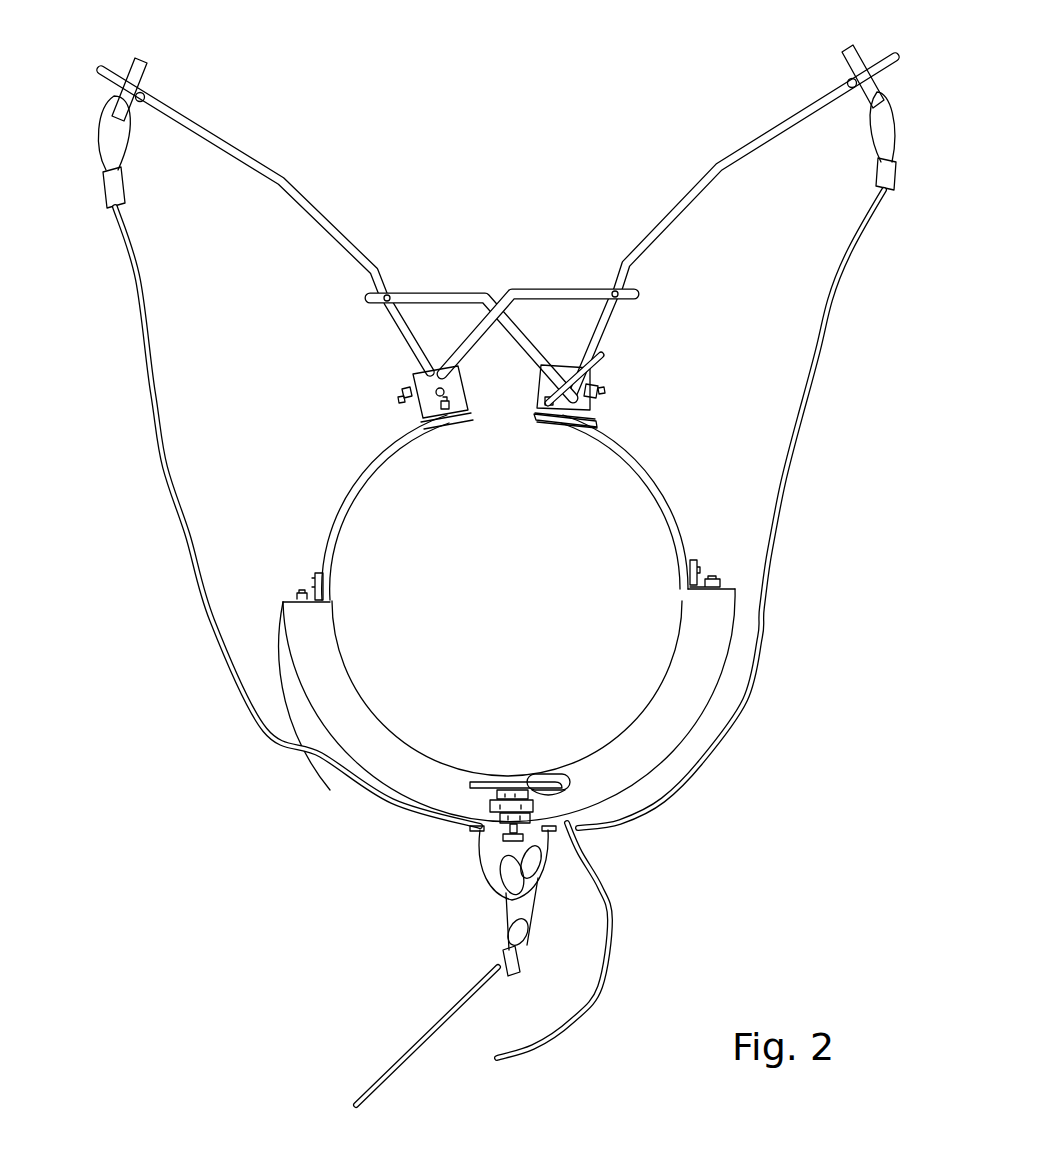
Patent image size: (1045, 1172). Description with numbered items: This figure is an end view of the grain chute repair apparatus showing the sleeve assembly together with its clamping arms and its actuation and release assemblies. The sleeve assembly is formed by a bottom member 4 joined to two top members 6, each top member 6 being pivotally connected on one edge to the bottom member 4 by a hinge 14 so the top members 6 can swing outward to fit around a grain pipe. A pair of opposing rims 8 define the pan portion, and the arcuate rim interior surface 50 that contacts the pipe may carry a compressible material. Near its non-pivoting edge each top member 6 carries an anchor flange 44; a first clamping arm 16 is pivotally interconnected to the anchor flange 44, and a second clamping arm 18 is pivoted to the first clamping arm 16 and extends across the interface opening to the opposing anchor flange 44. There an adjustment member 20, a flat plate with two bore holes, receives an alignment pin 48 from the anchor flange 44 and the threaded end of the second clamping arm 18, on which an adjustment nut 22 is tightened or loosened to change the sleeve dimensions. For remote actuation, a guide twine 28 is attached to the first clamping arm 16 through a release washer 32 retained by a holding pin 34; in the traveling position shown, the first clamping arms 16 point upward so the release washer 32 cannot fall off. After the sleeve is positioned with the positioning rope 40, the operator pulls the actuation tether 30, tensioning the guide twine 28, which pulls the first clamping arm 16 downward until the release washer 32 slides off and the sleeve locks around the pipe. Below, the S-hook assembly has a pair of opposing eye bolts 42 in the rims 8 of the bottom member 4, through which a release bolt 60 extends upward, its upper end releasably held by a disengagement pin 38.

The bottom member 4 is at (737, 617).
The top member 6 is at (367, 476).
The rim 8 is at (290, 665).
The hinge 14 is at (312, 590).
The first clamping arm 16 is at (258, 154).
The second clamping arm 18 is at (573, 290).
The adjustment member 20 is at (598, 360).
The adjustment nut 22 is at (600, 392).
The guide twine 28 is at (155, 402).
The actuation tether 30 is at (377, 1079).
The release washer 32 is at (146, 64).
The holding pin 34 is at (148, 97).
The disengagement pin 38 is at (568, 778).
The positioning rope 40 is at (528, 1050).
The eye bolt 42 is at (490, 815).
The anchor flange 44 is at (463, 385).
The alignment pin 48 is at (582, 416).
The rim interior surface 50 is at (360, 706).
The release bolt 60 is at (508, 838).